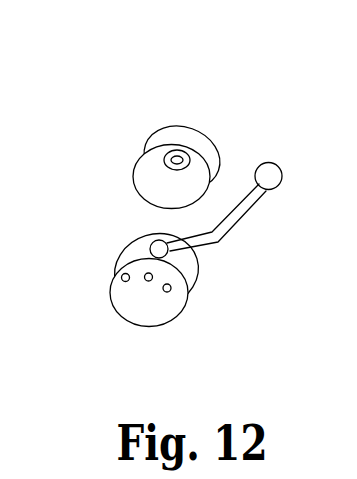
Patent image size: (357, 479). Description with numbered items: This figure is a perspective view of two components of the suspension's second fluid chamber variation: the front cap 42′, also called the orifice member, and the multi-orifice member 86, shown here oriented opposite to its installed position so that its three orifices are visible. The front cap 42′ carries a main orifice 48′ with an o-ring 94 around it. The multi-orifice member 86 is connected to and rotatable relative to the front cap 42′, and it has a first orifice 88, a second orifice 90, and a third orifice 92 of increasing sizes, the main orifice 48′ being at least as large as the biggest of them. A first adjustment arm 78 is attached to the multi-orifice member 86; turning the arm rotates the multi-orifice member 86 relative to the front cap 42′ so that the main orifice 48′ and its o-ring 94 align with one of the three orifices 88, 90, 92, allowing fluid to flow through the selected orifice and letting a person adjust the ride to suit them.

The front cap 42′ is at (200, 167).
The main orifice 48′ is at (180, 149).
The o-ring 94 is at (164, 155).
The multi-orifice member 86 is at (184, 270).
The first adjustment arm 78 is at (238, 219).
The first orifice 88 is at (121, 279).
The second orifice 90 is at (146, 280).
The third orifice 92 is at (164, 292).